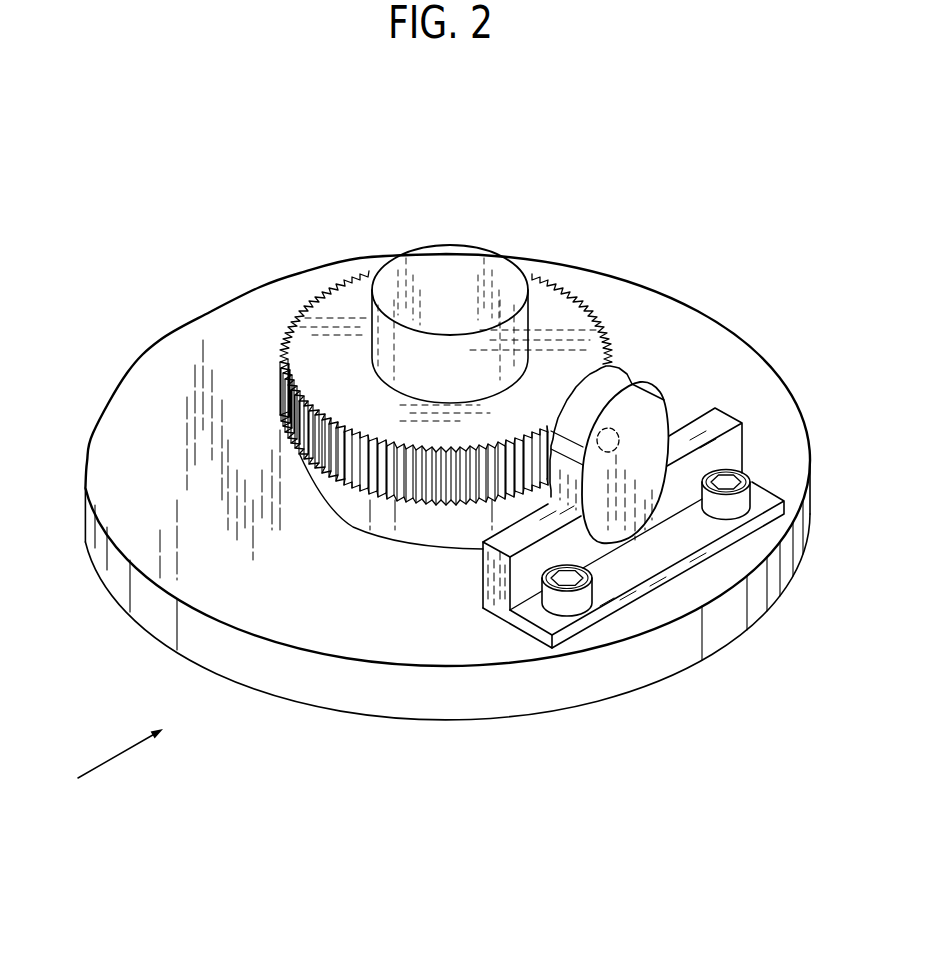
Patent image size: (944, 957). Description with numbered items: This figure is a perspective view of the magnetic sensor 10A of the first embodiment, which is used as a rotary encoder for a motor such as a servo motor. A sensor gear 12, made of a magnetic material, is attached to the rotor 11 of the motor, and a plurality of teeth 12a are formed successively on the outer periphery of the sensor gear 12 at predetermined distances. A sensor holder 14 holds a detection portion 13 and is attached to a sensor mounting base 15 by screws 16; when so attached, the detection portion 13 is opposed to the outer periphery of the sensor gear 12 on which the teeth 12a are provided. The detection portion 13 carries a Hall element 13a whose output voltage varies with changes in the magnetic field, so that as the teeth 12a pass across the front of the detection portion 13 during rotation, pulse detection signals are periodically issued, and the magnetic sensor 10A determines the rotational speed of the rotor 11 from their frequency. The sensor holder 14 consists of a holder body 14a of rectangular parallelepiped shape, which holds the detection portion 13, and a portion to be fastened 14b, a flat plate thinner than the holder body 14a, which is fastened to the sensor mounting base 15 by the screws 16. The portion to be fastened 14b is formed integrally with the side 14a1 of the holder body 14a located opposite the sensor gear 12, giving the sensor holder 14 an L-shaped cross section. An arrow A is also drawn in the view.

The magnetic sensor 10A is at (455, 457).
The rotor 11 is at (457, 267).
The sensor gear 12 is at (377, 378).
The teeth 12a is at (313, 432).
The detection portion 13 is at (656, 401).
The Hall element 13a is at (630, 432).
The sensor holder 14 is at (586, 592).
The holder body 14a is at (587, 569).
The side of the holder body 14a1 is at (727, 450).
The portion to be fastened 14b is at (538, 636).
The sensor mounting base 15 is at (157, 477).
The screws 16 is at (580, 600).
The viewing direction arrow A is at (113, 763).